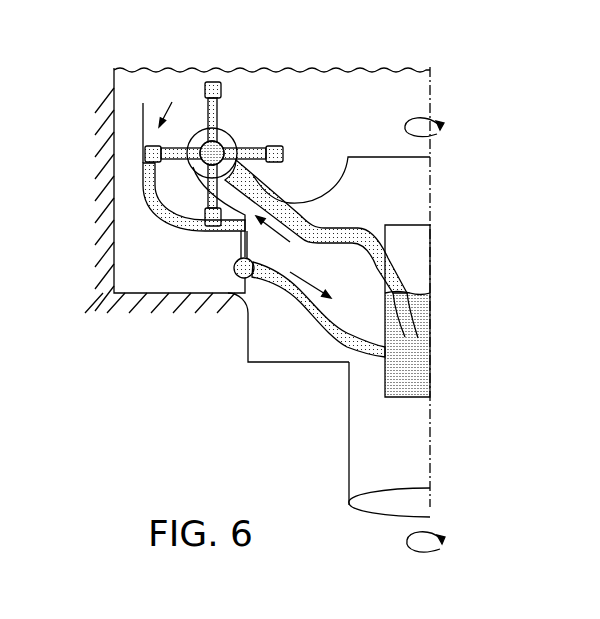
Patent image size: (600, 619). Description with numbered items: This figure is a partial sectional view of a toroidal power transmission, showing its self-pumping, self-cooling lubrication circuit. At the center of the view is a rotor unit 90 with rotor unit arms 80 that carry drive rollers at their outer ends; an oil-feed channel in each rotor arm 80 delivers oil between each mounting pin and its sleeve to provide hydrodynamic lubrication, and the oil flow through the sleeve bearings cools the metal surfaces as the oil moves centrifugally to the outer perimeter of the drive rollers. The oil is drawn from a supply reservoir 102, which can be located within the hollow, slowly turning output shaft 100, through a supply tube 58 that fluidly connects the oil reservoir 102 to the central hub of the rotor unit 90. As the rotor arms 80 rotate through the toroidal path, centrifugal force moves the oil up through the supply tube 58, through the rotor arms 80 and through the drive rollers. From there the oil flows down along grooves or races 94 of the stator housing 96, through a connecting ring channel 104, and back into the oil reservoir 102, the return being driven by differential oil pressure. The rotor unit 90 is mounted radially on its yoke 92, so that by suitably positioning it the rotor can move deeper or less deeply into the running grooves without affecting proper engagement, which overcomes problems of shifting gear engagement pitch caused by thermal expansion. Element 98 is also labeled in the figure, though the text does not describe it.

The supply tube 58 is at (320, 228).
The rotor unit arm 80 is at (221, 109).
The rotor unit 90 is at (180, 81).
The yoke 92 is at (423, 175).
The groove 94 is at (150, 176).
The stator housing 96 is at (113, 232).
The outlet 98 is at (241, 309).
The output shaft 100 is at (372, 517).
The oil reservoir 102 is at (432, 370).
The connecting ring channel 104 is at (252, 282).